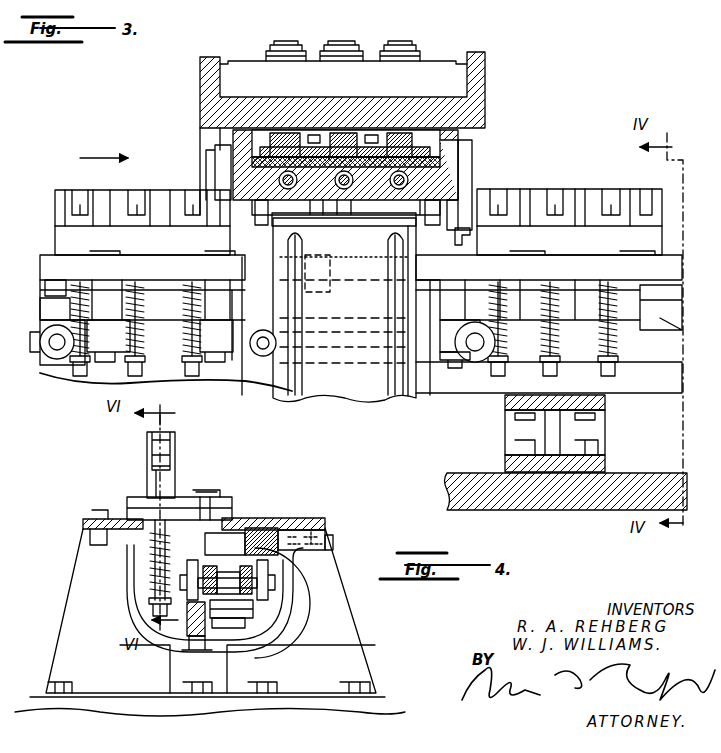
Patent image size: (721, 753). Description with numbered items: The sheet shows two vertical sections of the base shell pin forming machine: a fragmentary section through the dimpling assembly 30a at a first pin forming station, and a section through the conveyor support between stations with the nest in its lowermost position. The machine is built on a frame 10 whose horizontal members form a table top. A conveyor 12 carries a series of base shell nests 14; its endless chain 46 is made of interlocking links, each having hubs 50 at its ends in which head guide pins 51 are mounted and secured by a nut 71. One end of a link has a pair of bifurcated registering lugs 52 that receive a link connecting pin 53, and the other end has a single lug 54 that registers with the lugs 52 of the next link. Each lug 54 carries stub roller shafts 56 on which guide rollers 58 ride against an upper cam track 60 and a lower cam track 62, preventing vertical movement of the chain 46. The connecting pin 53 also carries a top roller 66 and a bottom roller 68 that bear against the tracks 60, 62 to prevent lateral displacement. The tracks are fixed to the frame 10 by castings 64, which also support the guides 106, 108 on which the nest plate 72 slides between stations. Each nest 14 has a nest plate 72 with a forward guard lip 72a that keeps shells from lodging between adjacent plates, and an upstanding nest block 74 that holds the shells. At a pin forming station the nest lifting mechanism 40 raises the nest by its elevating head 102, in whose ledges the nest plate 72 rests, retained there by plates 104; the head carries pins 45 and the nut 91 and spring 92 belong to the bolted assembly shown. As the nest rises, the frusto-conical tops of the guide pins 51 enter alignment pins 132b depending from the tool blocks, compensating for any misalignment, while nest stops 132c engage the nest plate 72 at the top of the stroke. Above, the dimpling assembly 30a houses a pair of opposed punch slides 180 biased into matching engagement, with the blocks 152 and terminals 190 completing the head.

In FIG. 3, the frame 10 is at (445, 485).
In FIG. 4, the frame 10 is at (395, 714).
In FIG. 3, the conveyor 12 is at (35, 362).
In FIG. 4, the conveyor 12 is at (250, 612).
In FIG. 3, the base shell nest 14 is at (205, 188).
In FIG. 4, the base shell nest 14 is at (132, 495).
In FIG. 3, the first base shell pin forming punch and die or dimpling assembly 30a is at (489, 93).
In FIG. 3, the nest lifting mechanism 40 is at (365, 382).
In FIG. 3, the guide pin 45 is at (288, 380).
In FIG. 4, the chain 46 is at (258, 618).
In FIG. 3, the hub 50 is at (640, 322).
In FIG. 3, the head guide pin 51 is at (235, 282).
In FIG. 4, the head guide pin 51 is at (180, 520).
In FIG. 4, the registering lug 52 is at (220, 598).
In FIG. 3, the link connecting pin 53 is at (56, 282).
In FIG. 4, the link connecting pin 53 is at (213, 578).
In FIG. 4, the single lug 54 is at (253, 605).
In FIG. 3, the stub roller shaft 56 is at (478, 352).
In FIG. 4, the stub roller shaft 56 is at (200, 584).
In FIG. 3, the guide roller 58 is at (57, 360).
In FIG. 4, the guide roller 58 is at (185, 585).
In FIG. 3, the upper cam track 60 is at (165, 300).
In FIG. 4, the upper cam track 60 is at (280, 540).
In FIG. 3, the lower cam track 62 is at (620, 400).
In FIG. 4, the lower cam track 62 is at (190, 645).
In FIG. 3, the bracket or casting 64 is at (598, 435).
In FIG. 4, the bracket or casting 64 is at (80, 600).
In FIG. 3, the top roller 66 is at (275, 325).
In FIG. 4, the top roller 66 is at (233, 545).
In FIG. 4, the bottom roller 68 is at (210, 640).
In FIG. 3, the nut 71 is at (230, 360).
In FIG. 3, the nest plate 72 is at (445, 232).
In FIG. 3, the forward guard lip 72a is at (472, 233).
In FIG. 4, the forward guard lip 72a is at (228, 516).
In FIG. 3, the nest block 74 is at (240, 165).
In FIG. 4, the nest block 74 is at (168, 485).
In FIG. 3, the nut 91 is at (140, 378).
In FIG. 4, the nut 91 is at (160, 608).
In FIG. 3, the spring 92 is at (546, 306).
In FIG. 3, the elevating head 102 is at (380, 392).
In FIG. 3, the plate 104 is at (365, 222).
In FIG. 4, the guide 106 is at (88, 514).
In FIG. 4, the guide 108 is at (328, 518).
In FIG. 3, the alignment pin 132b is at (430, 200).
In FIG. 3, the nest stop 132c is at (356, 212).
In FIG. 3, the contact block 152 is at (282, 132).
In FIG. 3, the punch slide 180 is at (343, 131).
In FIG. 3, the terminal 190 is at (370, 58).